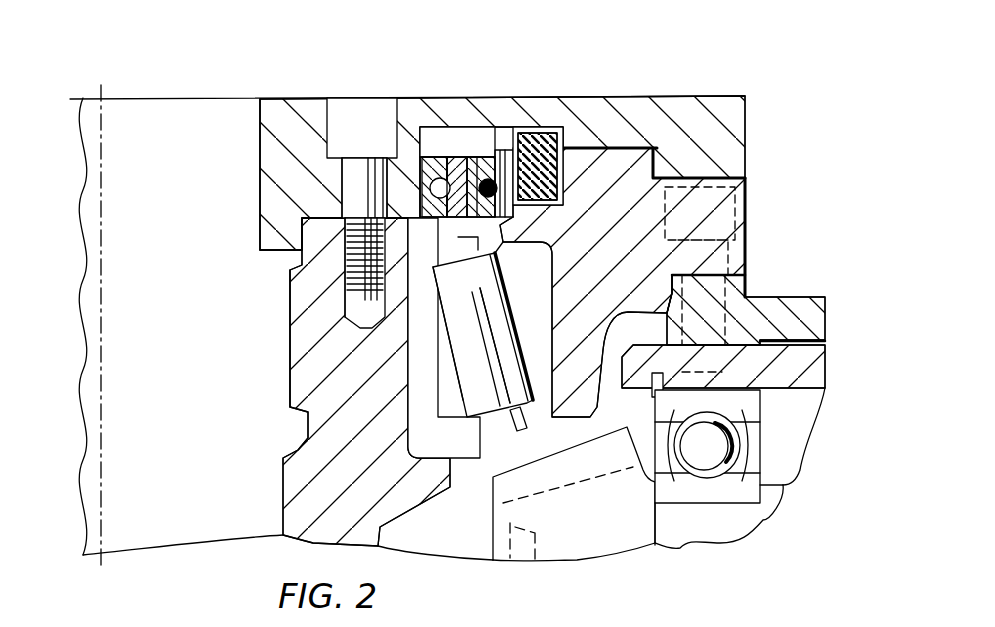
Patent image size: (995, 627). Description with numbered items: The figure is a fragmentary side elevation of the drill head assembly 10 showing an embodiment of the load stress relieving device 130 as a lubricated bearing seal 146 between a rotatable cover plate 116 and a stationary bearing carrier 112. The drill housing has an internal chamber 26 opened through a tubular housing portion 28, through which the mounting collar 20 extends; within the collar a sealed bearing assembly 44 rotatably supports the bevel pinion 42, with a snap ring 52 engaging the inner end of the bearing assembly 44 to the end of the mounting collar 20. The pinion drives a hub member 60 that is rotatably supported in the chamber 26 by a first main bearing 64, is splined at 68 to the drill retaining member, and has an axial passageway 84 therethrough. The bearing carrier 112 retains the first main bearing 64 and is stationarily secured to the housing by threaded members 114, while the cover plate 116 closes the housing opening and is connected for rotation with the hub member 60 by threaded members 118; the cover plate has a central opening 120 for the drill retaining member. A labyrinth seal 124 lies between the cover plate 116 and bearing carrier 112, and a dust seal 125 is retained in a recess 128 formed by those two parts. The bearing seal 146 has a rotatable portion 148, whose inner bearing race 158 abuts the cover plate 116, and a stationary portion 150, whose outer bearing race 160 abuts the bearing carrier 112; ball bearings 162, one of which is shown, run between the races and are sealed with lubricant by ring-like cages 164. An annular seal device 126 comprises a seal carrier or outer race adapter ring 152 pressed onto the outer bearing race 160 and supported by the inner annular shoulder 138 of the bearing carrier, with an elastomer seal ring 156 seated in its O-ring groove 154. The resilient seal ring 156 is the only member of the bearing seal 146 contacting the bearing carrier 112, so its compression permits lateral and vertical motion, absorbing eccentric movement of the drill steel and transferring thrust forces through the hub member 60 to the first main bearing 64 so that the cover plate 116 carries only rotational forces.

The drill head assembly 10 is at (681, 82).
The mounting collar 20 is at (824, 351).
The internal cavity or chamber 26 is at (448, 534).
The tubular housing portion 28 is at (780, 297).
The bevel pinion 42 is at (591, 526).
The sealed bearing assembly 44 is at (782, 443).
The snap ring 52 is at (652, 392).
The hub member 60 is at (300, 477).
The first main bearing 64 is at (490, 396).
The splined connection 68 is at (291, 290).
The axial passageway 84 is at (179, 436).
The bearing carrier 112 is at (657, 152).
The threaded members 114 is at (712, 210).
The cover plate 116 is at (272, 104).
The threaded members 118 is at (352, 201).
The central opening 120 is at (262, 137).
The labyrinth seal 124 is at (717, 172).
The dust seal 125 is at (550, 142).
The annular seal device 126 is at (497, 195).
The recess 128 is at (546, 128).
The load stress relieving device 130 is at (447, 138).
The inner annular shoulder 138 is at (481, 260).
The bearing seal 146 is at (460, 165).
The rotatable portion 148 is at (440, 222).
The stationary portion 150 is at (449, 165).
The seal carrier or outer race adapter ring 152 is at (485, 176).
The O-ring groove 154 is at (492, 245).
The elastomer seal ring 156 is at (492, 182).
The inner bearing race 158 is at (418, 158).
The outer bearing race 160 is at (458, 270).
The ball bearings 162 is at (348, 195).
The ring-like cages 164 is at (437, 178).